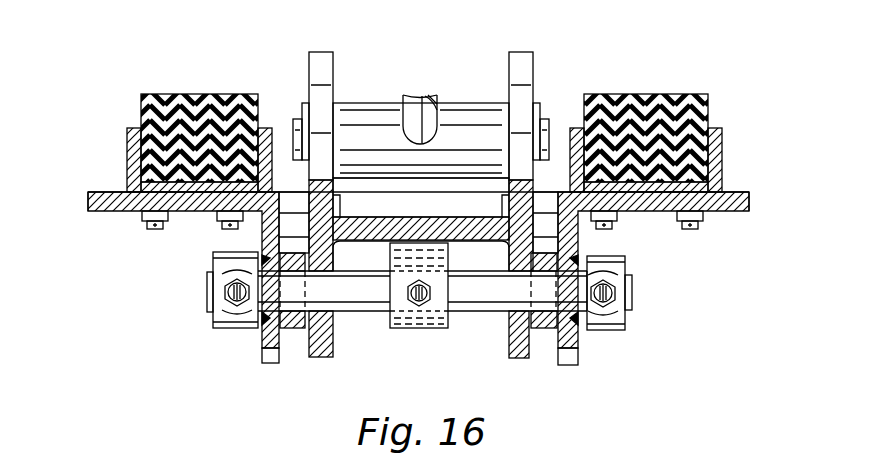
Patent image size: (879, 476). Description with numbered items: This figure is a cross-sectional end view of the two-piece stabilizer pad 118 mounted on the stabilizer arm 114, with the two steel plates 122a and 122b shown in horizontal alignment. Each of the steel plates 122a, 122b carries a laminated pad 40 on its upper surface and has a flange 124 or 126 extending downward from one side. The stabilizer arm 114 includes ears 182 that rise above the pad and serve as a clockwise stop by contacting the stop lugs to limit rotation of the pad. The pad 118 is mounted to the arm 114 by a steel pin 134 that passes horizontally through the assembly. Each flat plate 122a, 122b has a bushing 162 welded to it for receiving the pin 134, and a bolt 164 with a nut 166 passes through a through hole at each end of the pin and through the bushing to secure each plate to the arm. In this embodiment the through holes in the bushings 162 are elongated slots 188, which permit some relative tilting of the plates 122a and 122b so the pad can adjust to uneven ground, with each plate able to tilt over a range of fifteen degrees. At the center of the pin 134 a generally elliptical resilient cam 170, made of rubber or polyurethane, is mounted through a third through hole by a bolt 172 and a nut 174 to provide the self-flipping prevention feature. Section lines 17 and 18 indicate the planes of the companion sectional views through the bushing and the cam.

The section line 17- 17 is at (238, 252).
The section line 18- 18 is at (417, 217).
The laminated pad 40 is at (170, 94).
The stabilizer arm 114 is at (325, 358).
The stabilizer pad 118 is at (710, 69).
The steel plate 122a is at (96, 192).
The steel plate 122b is at (733, 192).
The flange 124 is at (262, 346).
The flange 126 is at (580, 345).
The steel pin 134 is at (497, 313).
The bushing 162 is at (213, 322).
The bolt 164 is at (226, 289).
The nut 166 is at (228, 298).
The cam 170 is at (390, 318).
The bolt 172 is at (446, 302).
The nut 174 is at (428, 303).
The ears 182 is at (322, 52).
The elongated slot 188 is at (222, 271).